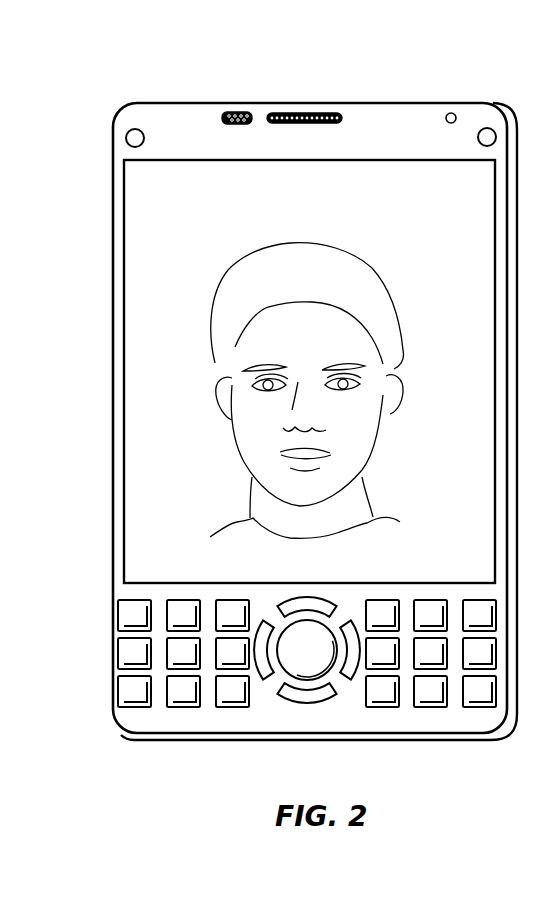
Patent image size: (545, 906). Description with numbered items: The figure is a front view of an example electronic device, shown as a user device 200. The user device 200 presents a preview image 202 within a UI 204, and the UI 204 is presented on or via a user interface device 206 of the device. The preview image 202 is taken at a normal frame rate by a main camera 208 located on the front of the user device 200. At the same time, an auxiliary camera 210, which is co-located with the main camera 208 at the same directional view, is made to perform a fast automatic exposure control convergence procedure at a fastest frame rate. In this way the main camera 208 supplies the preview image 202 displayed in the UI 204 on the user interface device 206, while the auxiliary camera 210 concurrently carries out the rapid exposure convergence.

The user device 200 is at (112, 138).
The preview image 202 is at (215, 305).
The UI 204 is at (155, 341).
The user interface device 206 is at (120, 375).
The main camera 208 is at (139, 129).
The auxiliary camera 210 is at (487, 131).